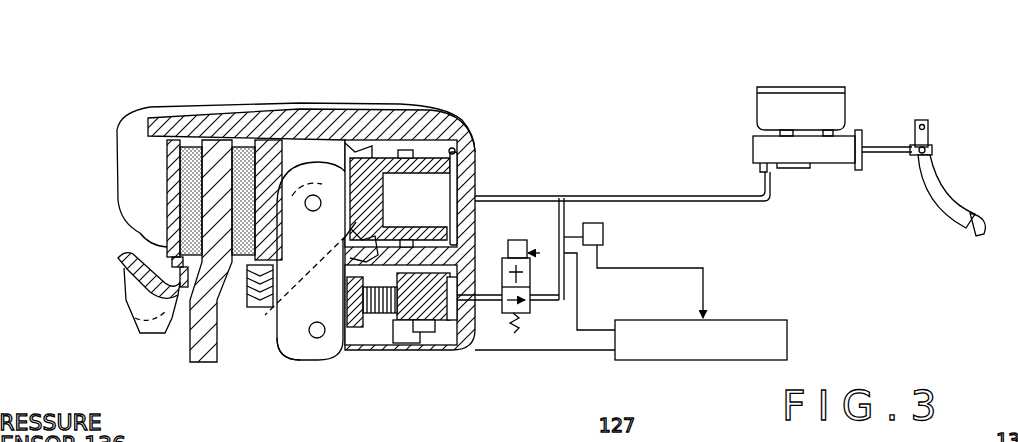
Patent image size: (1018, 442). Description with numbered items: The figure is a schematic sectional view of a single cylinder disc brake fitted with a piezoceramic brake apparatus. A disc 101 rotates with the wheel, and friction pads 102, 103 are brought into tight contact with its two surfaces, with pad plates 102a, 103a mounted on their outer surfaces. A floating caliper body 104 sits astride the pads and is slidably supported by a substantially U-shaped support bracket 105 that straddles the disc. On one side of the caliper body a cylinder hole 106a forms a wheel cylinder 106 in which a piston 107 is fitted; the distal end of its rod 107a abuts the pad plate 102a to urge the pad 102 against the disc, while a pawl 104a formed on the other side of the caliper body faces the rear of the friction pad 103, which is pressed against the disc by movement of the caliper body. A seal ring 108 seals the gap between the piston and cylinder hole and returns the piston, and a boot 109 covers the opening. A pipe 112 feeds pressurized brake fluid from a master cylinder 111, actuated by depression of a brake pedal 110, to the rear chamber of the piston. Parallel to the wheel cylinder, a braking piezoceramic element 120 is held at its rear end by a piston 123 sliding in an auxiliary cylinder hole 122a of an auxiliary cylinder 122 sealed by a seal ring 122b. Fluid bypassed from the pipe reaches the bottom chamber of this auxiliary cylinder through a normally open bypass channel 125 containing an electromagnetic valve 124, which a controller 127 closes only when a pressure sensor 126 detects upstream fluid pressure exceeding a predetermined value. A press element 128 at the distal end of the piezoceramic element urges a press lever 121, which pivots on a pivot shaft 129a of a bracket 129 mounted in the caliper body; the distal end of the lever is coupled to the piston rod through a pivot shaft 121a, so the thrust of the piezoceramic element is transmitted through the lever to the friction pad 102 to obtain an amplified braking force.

The disc 101 is at (217, 147).
The friction pad 102 is at (241, 150).
The pad plate 102a is at (267, 147).
The friction pad 103 is at (190, 150).
The pad plate 103a is at (167, 151).
The caliper body 104 is at (357, 117).
The pawl 104a is at (140, 216).
The support bracket 105 is at (125, 295).
The wheel cylinder 106 is at (445, 158).
The cylinder hole 106a is at (458, 163).
The piston 107 is at (391, 157).
The rod 107a is at (314, 150).
The seal ring 108 is at (421, 150).
The boot 109 is at (338, 186).
The brake pedal 110 is at (938, 197).
The master cylinder 111 is at (808, 87).
The pipe 112 is at (624, 196).
The braking piezoceramic element 120 is at (372, 326).
The press lever 121 is at (275, 306).
The pivot shaft 121a is at (313, 212).
The auxiliary cylinder 122 is at (446, 338).
The auxiliary cylinder hole 122a is at (466, 280).
The seal ring 122b is at (417, 345).
The piston 123 is at (418, 333).
The electromagnetic valve 124 is at (528, 327).
The bypass channel 125 is at (565, 288).
The pressure sensor 126 is at (604, 236).
The controller 127 is at (753, 320).
The press element 128 is at (352, 340).
The bracket 129 is at (301, 365).
The pivot shaft 129a is at (300, 352).